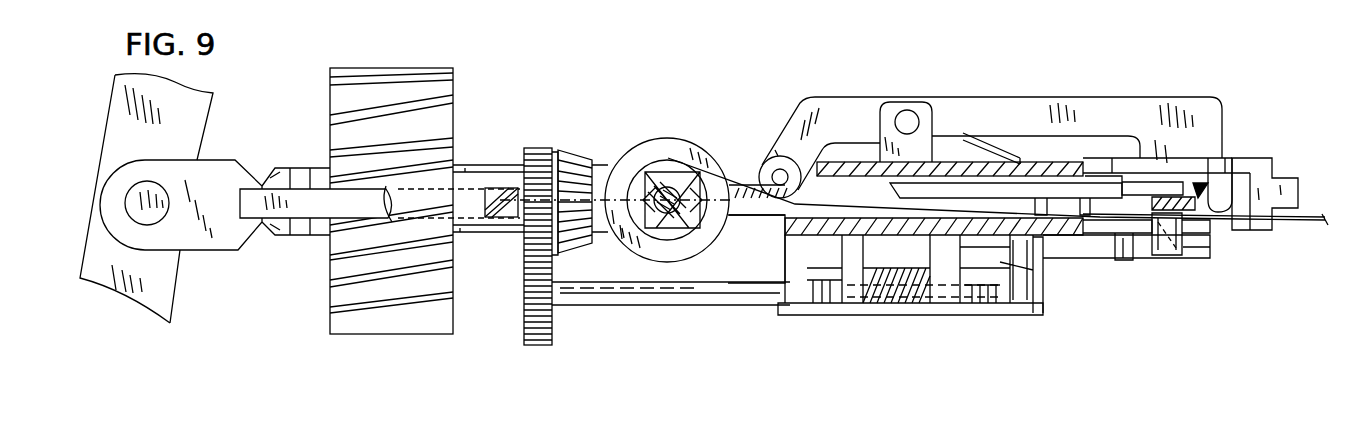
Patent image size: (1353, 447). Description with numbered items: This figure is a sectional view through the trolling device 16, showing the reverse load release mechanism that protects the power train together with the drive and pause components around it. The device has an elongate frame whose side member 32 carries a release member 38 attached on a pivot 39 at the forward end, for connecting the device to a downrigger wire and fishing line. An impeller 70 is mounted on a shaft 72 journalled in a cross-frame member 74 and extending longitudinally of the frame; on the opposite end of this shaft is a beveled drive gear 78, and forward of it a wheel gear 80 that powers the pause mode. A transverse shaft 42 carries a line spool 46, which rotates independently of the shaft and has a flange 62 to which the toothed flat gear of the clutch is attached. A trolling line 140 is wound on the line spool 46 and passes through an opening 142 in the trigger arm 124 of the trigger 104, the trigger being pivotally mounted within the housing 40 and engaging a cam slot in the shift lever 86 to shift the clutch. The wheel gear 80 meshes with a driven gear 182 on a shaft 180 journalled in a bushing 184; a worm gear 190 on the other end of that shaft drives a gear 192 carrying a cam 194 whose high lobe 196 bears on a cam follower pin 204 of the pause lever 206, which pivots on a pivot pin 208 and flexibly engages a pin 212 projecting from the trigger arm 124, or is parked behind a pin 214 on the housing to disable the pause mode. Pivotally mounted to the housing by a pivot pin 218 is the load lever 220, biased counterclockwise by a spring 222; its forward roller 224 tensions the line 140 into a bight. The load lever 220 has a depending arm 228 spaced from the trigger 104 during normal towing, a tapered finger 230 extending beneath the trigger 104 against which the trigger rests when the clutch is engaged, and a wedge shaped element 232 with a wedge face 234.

The trolling device 16 is at (312, 83).
The side member 32 is at (330, 205).
The release member 38 is at (190, 300).
The pivot 39 is at (150, 205).
The housing 40 is at (970, 176).
The shaft 42 is at (655, 250).
The line spool 46 is at (645, 190).
The flange 62 is at (620, 180).
The impeller 70 is at (403, 92).
The shaft 72 is at (458, 237).
The cross-frame member 74 is at (470, 205).
The beveled drive gear 78 is at (560, 152).
The wheel gear 80 is at (537, 148).
The shift lever 86 is at (935, 195).
The trigger 104 is at (1200, 190).
The trigger arm 124 is at (1147, 200).
The trolling line 140 is at (848, 203).
The opening 142 is at (1186, 216).
The shaft 180 is at (708, 308).
The driven gear 182 is at (538, 345).
The bushing 184 is at (772, 293).
The worm gear 190 is at (895, 303).
The gear 192 is at (978, 303).
The cam 194 is at (838, 278).
The high lobe 196 is at (808, 270).
The cam follower pin 204 is at (1040, 287).
The pause lever 206 is at (1088, 262).
The pivot pin 208 is at (1028, 297).
The pin 212 is at (1163, 255).
The pin 214 is at (1130, 262).
The pivot pin 218 is at (907, 122).
The load lever 220 is at (800, 100).
The spring 222 is at (1010, 165).
The roller 224 is at (768, 160).
The depending arm 228 is at (1177, 95).
The tapered finger 230 is at (1240, 200).
The wedge shaped element 232 is at (1150, 196).
The wedge face 234 is at (1178, 180).